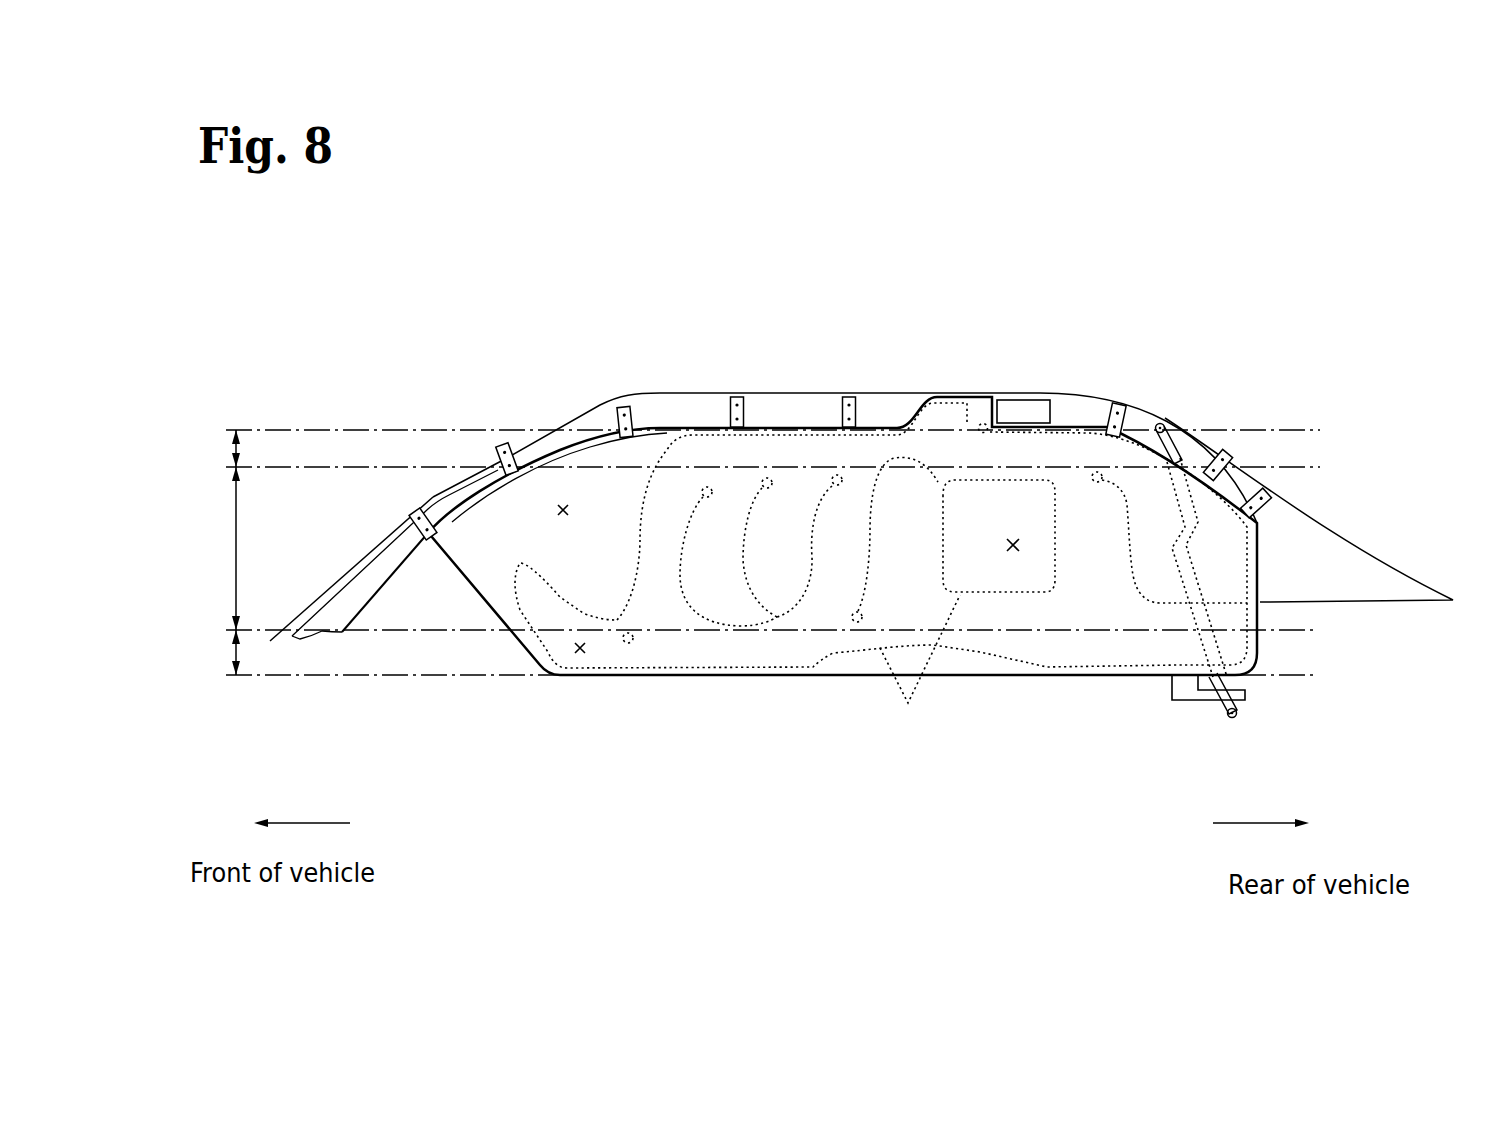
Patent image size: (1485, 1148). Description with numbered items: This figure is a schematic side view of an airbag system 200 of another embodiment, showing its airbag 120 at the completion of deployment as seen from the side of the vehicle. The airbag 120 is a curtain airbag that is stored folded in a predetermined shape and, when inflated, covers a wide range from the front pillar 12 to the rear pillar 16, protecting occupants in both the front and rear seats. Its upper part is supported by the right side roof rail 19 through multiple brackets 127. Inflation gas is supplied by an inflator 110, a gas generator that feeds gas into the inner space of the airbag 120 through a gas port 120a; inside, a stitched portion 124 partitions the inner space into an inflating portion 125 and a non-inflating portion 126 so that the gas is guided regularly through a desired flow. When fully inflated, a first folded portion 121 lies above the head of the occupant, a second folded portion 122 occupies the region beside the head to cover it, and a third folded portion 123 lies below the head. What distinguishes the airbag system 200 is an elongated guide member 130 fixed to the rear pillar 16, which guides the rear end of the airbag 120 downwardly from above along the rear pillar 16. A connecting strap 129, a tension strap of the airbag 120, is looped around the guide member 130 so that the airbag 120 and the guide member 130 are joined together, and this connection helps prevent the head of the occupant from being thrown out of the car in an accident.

The front pillar 12 is at (377, 545).
The rear pillar 16 is at (1320, 508).
The right side roof rail 19 is at (1063, 391).
The inflator 110 is at (1005, 395).
The airbag 120 is at (823, 678).
The gas port 120a is at (960, 400).
The first folded portion 121 is at (236, 458).
The second folded portion 122 is at (236, 548).
The third folded portion 123 is at (236, 650).
The stitched portion 124 is at (920, 672).
The inflating portion 125 is at (584, 656).
The non-inflating portion 126 is at (562, 503).
The brackets 127 is at (503, 447).
The connecting strap 129 is at (1190, 700).
The guide member 130 is at (1165, 430).
The airbag system 200 is at (891, 414).